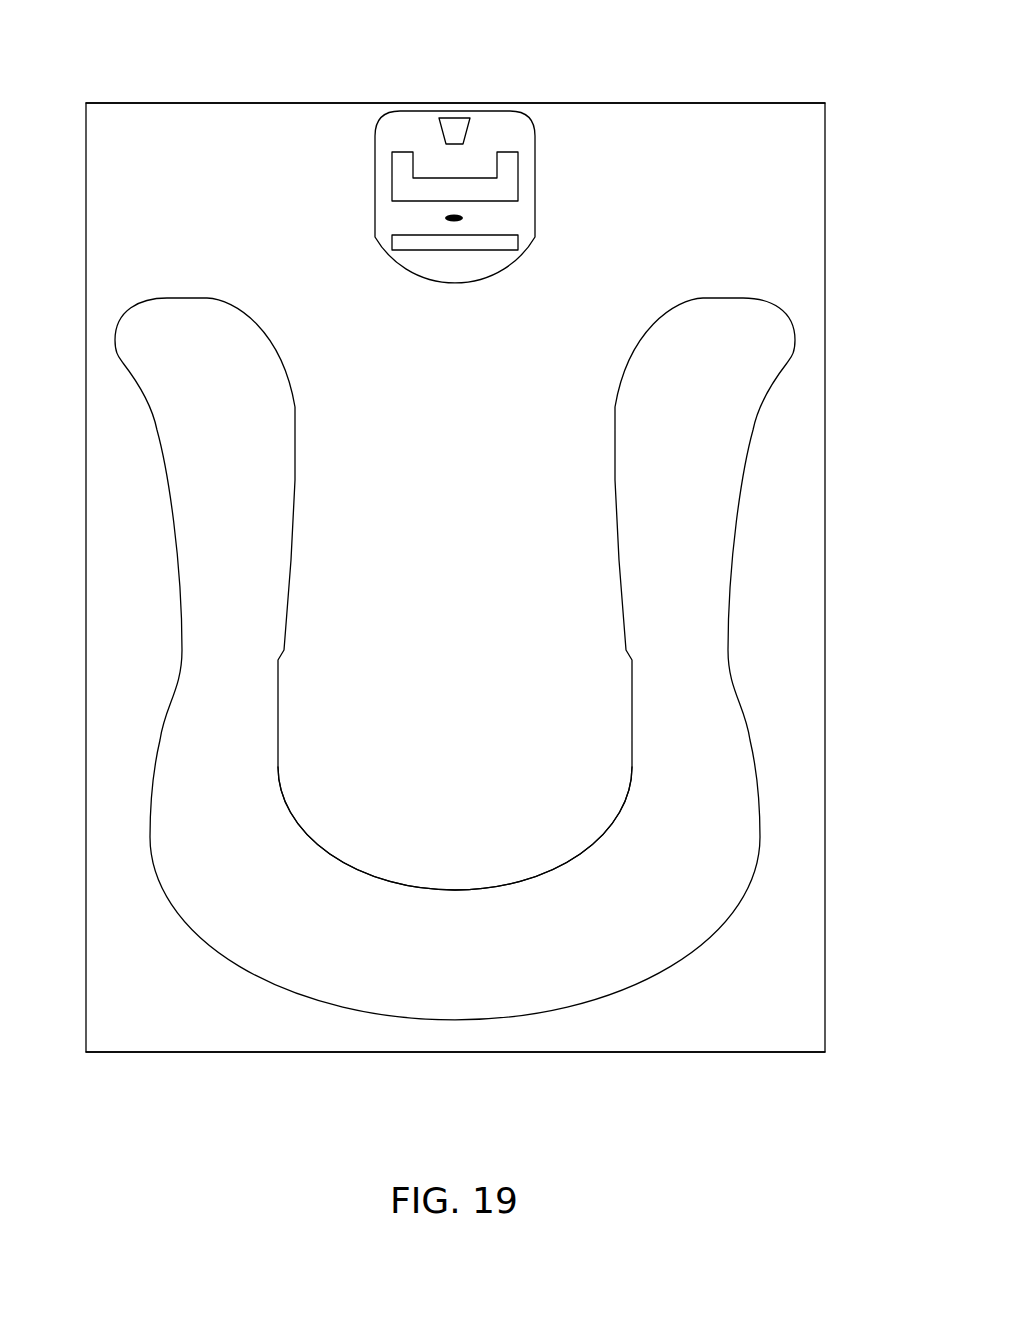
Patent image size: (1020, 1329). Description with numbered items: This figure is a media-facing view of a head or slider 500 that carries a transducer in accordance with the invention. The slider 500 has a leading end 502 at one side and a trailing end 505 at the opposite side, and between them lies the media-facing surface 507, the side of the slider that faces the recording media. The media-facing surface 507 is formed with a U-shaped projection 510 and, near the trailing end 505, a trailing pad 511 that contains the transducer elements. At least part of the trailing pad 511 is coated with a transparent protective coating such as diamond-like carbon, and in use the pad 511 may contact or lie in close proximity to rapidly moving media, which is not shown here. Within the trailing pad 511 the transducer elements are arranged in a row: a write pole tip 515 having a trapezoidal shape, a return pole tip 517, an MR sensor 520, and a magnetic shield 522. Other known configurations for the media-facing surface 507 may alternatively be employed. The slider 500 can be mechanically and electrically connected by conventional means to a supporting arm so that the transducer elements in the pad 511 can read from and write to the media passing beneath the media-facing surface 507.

The head or slider 500 is at (120, 27).
The leading end 502 is at (297, 1065).
The trailing end 505 is at (663, 90).
The media-facing surface 507 is at (472, 476).
The U-shaped projection 510 is at (247, 972).
The trailing pad 511 is at (535, 207).
The write pole tip 515 is at (452, 118).
The return pole tip 517 is at (392, 184).
The MR sensor 520 is at (446, 218).
The magnetic shield 522 is at (455, 250).